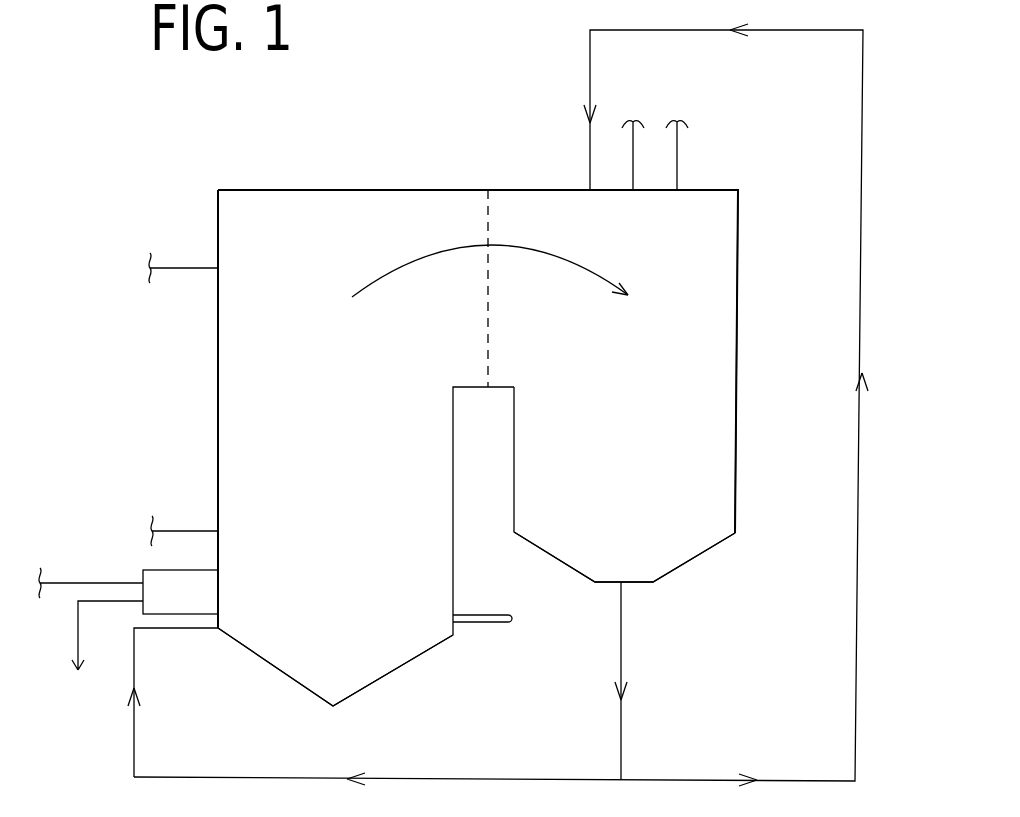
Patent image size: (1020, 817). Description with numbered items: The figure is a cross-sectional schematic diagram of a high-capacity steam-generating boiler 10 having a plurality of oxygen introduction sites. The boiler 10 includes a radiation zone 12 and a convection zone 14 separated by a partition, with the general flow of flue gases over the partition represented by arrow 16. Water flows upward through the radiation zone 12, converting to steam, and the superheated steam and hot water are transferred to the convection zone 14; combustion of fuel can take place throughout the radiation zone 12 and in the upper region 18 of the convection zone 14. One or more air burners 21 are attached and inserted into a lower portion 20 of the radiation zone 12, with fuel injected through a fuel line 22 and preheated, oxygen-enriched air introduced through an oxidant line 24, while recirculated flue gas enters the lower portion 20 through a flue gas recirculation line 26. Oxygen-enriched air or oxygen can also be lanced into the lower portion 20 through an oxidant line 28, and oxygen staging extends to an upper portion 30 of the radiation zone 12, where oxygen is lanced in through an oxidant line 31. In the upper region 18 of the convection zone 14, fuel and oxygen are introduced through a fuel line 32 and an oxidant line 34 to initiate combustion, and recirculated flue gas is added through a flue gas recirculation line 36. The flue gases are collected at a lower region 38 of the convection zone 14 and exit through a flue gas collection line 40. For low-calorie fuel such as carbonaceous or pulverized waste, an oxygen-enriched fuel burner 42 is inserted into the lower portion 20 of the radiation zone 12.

The high-capacity steam-generating boiler 10 is at (445, 405).
The radiation zone 12 is at (345, 413).
The convection zone 14 is at (628, 413).
The arrow 16 is at (425, 258).
The upper region 18 is at (716, 238).
The lower portion 20 is at (366, 665).
The air burner 21 is at (155, 570).
The fuel line 22 is at (80, 583).
The oxidant line 24 is at (78, 636).
The flue gas recirculation line 26 is at (178, 628).
The oxidant line 28 is at (174, 531).
The upper portion 30 is at (371, 192).
The oxidant line 31 is at (178, 268).
The fuel line 32 is at (677, 147).
The oxidant line 34 is at (633, 147).
The flue gas recirculation line 36 is at (590, 150).
The lower region 38 is at (680, 548).
The flue gas collection line 40 is at (623, 618).
The oxygen-enriched fuel burner 42 is at (492, 622).